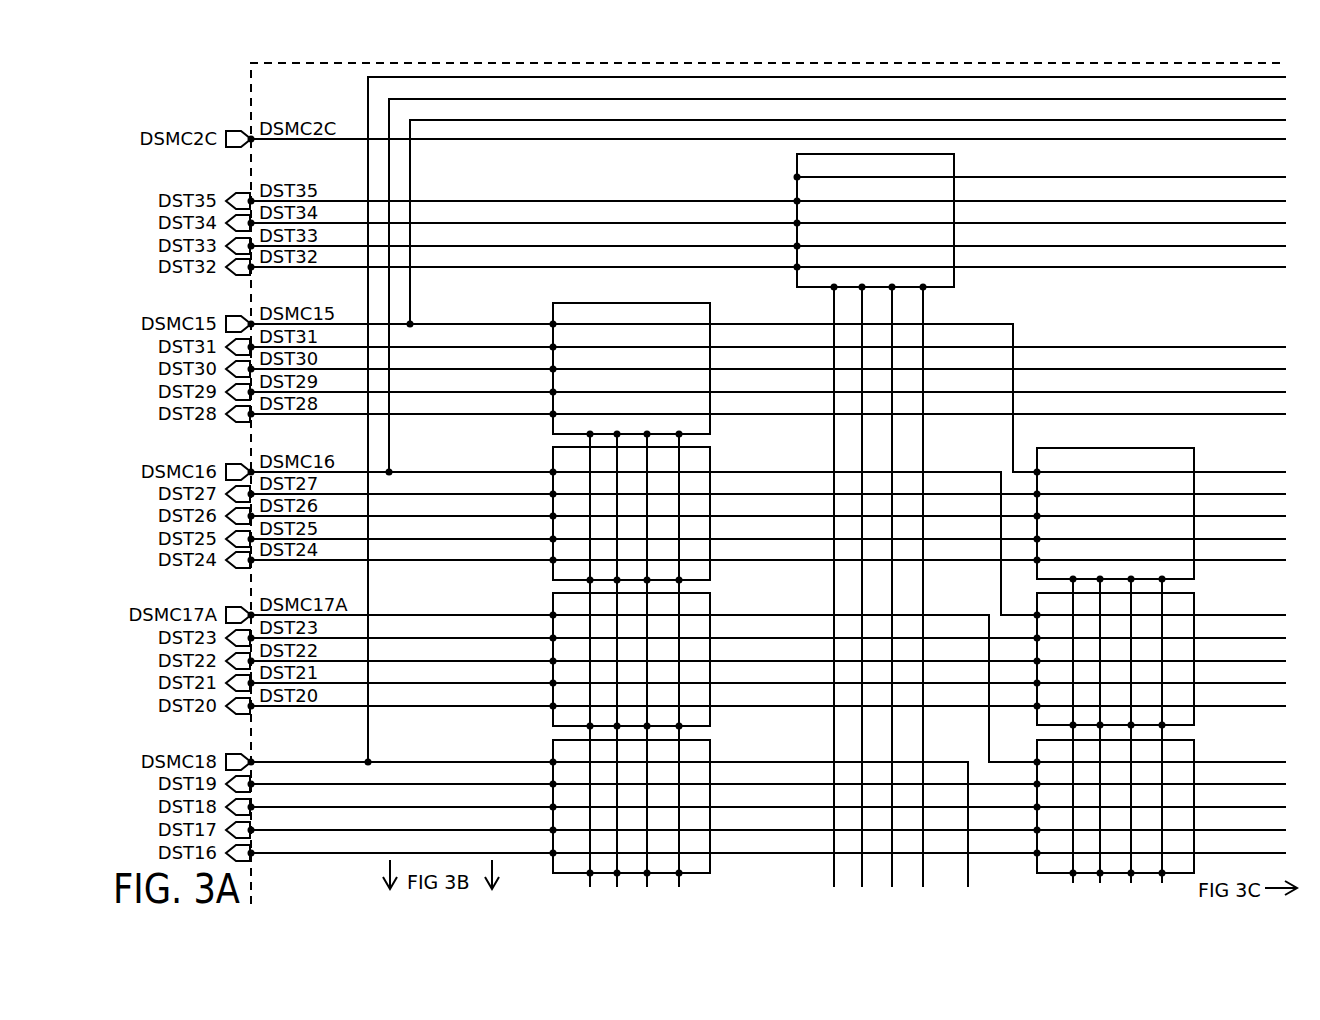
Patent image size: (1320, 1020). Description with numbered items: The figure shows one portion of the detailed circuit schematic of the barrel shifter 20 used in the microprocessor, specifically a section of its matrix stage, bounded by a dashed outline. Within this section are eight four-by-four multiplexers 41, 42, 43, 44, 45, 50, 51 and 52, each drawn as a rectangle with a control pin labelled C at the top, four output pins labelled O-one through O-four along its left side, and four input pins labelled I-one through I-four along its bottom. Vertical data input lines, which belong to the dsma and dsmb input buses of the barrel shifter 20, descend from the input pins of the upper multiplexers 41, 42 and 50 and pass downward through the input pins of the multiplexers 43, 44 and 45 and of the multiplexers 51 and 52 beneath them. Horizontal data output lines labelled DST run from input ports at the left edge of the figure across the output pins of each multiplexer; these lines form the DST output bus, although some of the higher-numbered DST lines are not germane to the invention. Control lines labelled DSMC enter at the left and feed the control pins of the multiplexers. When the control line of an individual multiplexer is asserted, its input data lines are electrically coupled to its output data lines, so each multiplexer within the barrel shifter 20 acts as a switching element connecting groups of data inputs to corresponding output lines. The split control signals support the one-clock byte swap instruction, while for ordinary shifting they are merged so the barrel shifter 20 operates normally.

The barrel shifter 20 is at (250, 97).
The multiplexer 41 is at (954, 164).
The multiplexer 42 is at (710, 313).
The multiplexer 43 is at (710, 457).
The multiplexer 44 is at (710, 603).
The multiplexer 45 is at (710, 750).
The multiplexer 50 is at (1194, 458).
The multiplexer 51 is at (1194, 603).
The multiplexer 52 is at (1194, 750).